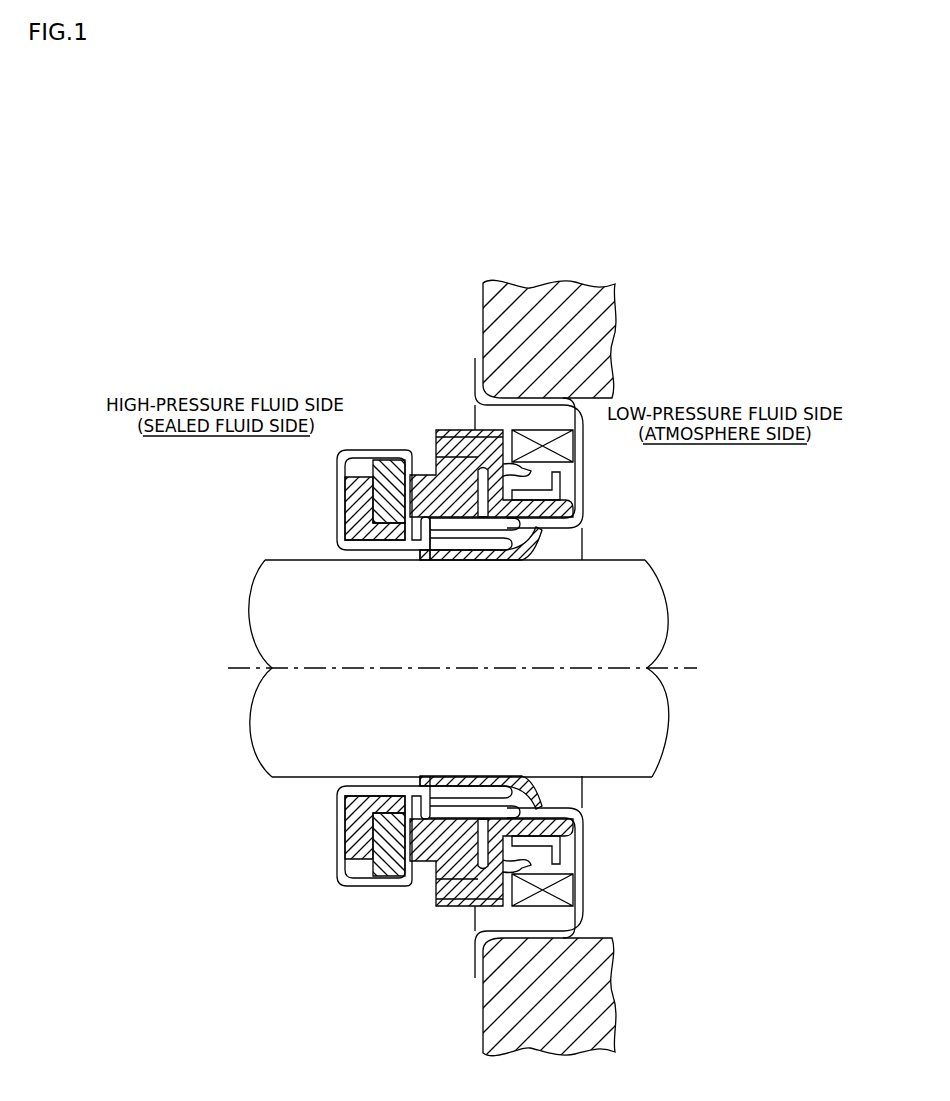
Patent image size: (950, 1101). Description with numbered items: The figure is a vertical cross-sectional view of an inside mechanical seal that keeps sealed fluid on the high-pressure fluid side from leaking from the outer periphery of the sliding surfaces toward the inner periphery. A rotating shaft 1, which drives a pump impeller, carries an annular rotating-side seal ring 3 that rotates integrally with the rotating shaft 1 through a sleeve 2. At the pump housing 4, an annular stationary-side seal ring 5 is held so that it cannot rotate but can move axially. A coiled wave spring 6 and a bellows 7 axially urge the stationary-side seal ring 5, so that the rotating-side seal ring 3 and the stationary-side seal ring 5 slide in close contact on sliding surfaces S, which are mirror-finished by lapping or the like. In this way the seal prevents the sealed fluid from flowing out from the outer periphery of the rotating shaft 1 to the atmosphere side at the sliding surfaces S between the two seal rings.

The rotating shaft 1 is at (378, 645).
The sleeve 2 is at (343, 507).
The rotating-side seal ring 3 is at (372, 450).
The pump housing 4 is at (540, 302).
The stationary-side seal ring 5 is at (430, 467).
The coiled wave spring 6 is at (563, 450).
The bellows 7 is at (468, 430).
The sliding surfaces S is at (432, 560).